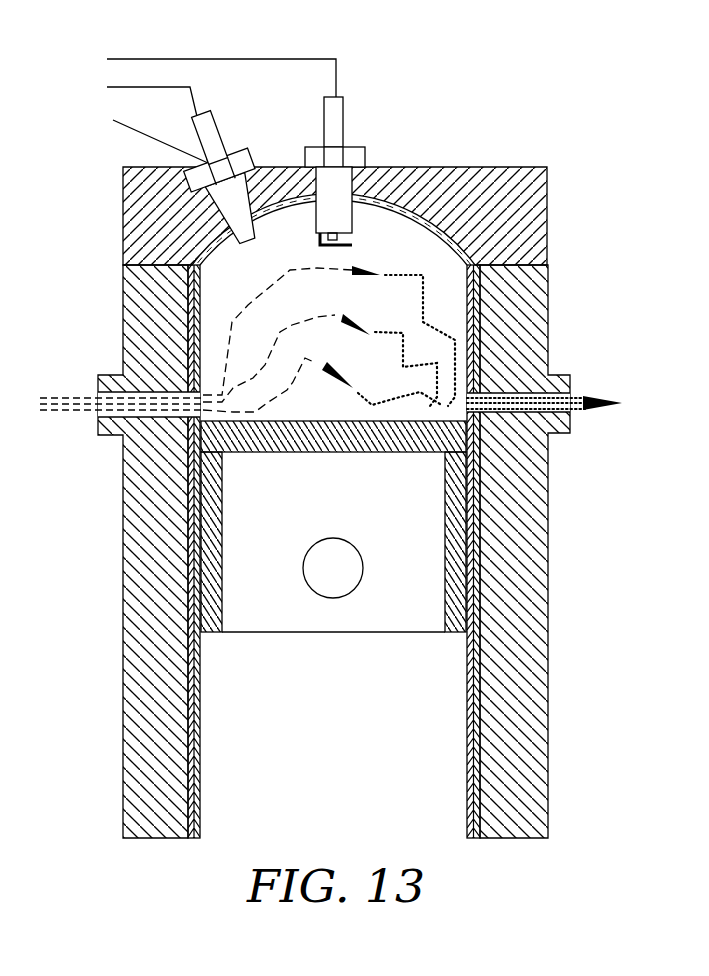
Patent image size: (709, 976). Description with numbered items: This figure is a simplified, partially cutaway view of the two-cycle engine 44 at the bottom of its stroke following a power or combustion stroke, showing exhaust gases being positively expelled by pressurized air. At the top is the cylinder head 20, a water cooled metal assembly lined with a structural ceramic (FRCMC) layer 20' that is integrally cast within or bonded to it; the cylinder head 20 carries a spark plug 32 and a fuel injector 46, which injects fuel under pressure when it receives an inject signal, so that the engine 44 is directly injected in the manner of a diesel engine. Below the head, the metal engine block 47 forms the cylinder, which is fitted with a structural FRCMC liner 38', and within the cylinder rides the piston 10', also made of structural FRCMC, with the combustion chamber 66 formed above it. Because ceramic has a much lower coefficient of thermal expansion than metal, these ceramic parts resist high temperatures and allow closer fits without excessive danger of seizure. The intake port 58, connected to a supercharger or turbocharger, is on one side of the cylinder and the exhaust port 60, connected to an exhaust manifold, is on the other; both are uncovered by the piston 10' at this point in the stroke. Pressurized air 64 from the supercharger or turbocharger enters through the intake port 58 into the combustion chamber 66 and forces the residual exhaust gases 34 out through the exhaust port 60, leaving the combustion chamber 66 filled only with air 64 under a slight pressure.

The cylinder head 20 is at (339, 199).
The structural ceramic (FRCMC) layer 20' is at (333, 232).
The spark plug 32 is at (335, 122).
The fuel injector 46 is at (212, 133).
The engine 44 is at (484, 136).
The metal engine block 47 is at (548, 518).
The intake ports 58 is at (102, 410).
The exhaust port 60 is at (570, 415).
The piston 10' is at (333, 526).
The pressurized air 64 is at (67, 395).
The structural FRCMC liners 38' is at (329, 339).
The combustion chamber 66 is at (310, 303).
The residual exhaust gases 34 is at (587, 398).